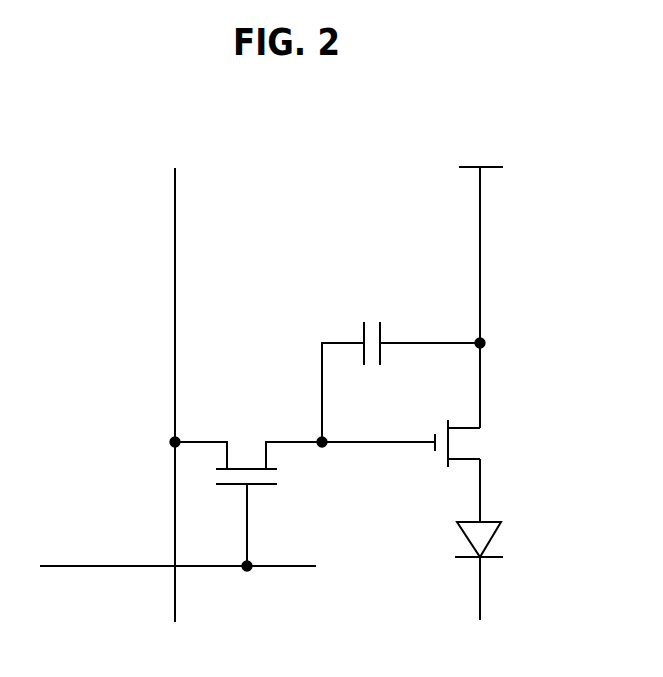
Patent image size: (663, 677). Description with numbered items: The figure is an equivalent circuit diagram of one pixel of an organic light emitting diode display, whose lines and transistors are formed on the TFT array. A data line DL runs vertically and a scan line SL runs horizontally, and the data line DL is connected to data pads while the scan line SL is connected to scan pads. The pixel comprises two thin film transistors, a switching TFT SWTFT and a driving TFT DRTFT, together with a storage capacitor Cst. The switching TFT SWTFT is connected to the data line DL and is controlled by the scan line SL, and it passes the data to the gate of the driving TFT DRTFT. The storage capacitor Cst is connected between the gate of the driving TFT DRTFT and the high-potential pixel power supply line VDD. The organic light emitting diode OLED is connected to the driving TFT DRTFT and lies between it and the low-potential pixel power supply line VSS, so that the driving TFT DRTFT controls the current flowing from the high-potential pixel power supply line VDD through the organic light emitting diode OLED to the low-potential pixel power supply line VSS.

The data line DL is at (179, 381).
The scan line SL is at (166, 567).
The switching TFT SWTFT is at (248, 489).
The storage capacitor Cst is at (403, 368).
The high-potential pixel power supply line VDD is at (481, 282).
The driving TFT DRTFT is at (429, 471).
The organic light emitting diode OLED is at (505, 571).
The low-potential pixel power supply line VSS is at (481, 626).